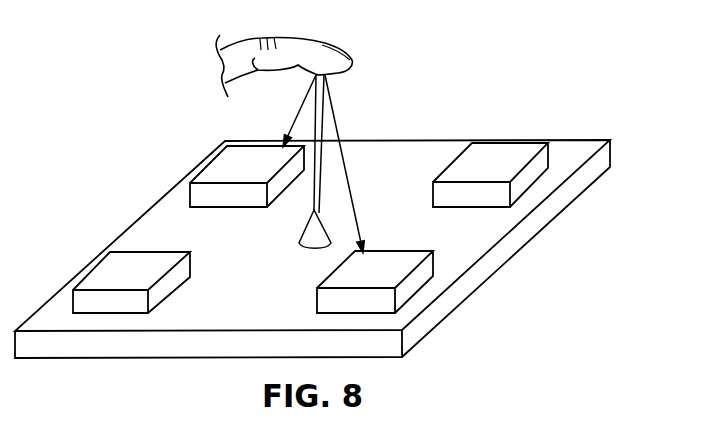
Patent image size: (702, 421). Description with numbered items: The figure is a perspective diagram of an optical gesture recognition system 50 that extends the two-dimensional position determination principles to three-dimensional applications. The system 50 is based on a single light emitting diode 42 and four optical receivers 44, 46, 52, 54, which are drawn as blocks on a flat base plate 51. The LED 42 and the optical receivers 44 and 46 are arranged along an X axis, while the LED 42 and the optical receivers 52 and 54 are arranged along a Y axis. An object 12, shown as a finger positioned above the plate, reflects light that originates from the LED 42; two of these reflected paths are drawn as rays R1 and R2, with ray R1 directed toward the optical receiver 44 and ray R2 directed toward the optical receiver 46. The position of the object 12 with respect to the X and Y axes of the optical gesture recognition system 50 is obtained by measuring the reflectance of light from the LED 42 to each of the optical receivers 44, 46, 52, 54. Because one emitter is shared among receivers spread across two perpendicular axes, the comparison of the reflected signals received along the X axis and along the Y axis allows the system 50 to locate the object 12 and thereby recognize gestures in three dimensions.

The object 12 is at (352, 51).
The light emitting diode 42 is at (304, 230).
The optical receiver 44 is at (257, 176).
The optical receiver 46 is at (393, 280).
The optical gesture recognition system 50 is at (512, 66).
The substrate 51 is at (513, 240).
The optical receiver 52 is at (143, 280).
The optical receiver 54 is at (503, 175).
The reflected ray 1 R1 is at (300, 108).
The reflected ray 2 R2 is at (333, 105).